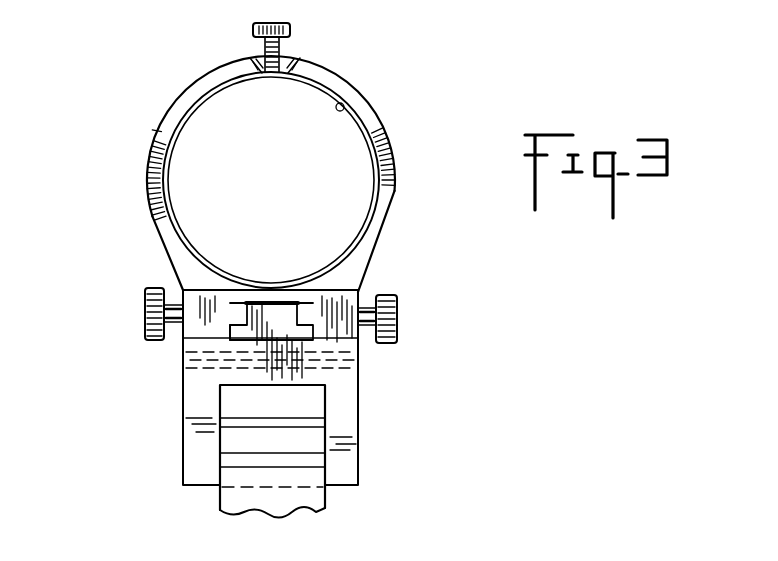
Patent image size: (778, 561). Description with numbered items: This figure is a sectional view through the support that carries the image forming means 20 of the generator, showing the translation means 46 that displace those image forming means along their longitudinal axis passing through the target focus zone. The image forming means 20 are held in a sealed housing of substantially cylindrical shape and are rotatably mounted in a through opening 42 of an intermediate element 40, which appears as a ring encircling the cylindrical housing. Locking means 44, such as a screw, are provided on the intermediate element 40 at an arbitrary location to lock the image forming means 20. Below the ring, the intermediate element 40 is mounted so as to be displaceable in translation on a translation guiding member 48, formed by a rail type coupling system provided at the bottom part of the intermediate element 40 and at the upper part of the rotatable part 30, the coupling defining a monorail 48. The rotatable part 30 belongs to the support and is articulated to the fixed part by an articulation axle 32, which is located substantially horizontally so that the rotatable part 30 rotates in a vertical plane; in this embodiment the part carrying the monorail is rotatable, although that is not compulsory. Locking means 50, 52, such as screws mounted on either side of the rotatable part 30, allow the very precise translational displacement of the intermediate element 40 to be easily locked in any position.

The image forming means 20 is at (190, 212).
The rotatable part 30 is at (350, 410).
The articulation axle 32 is at (330, 447).
The intermediate element 40 is at (163, 123).
The through opening 42 is at (343, 103).
The locking means 44 is at (264, 45).
The translation means 46 is at (233, 322).
The translation guiding member 48 is at (292, 300).
The locking means 50 is at (398, 332).
The locking means 52 is at (145, 312).